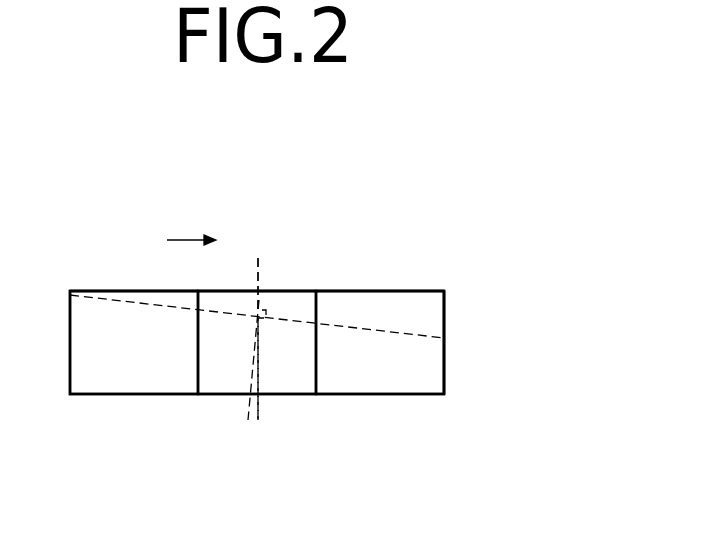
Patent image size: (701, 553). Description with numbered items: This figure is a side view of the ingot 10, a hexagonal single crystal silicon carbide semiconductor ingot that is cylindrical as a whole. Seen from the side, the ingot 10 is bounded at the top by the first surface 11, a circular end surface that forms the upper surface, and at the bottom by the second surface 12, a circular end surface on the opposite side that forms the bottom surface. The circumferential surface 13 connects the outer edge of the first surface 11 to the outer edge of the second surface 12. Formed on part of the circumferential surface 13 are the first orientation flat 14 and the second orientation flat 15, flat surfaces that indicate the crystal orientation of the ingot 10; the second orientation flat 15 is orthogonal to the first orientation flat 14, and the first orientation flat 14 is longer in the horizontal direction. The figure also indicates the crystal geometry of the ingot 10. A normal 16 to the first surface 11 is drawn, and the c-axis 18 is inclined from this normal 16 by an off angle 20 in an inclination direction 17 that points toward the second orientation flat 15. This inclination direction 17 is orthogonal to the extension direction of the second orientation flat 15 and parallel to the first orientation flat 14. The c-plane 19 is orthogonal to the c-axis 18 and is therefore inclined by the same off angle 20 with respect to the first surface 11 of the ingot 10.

The ingot 10 is at (445, 232).
The first surface 11 is at (93, 288).
The second surface 12 is at (93, 394).
The circumferential surface 13 is at (160, 375).
The first orientation flat 14 is at (292, 377).
The second orientation flat 15 is at (445, 313).
The normal 16 is at (257, 274).
The inclination direction 17 is at (191, 226).
The c-axis 18 is at (262, 276).
The c-plane 19 is at (134, 302).
The off angle 20 is at (258, 262).